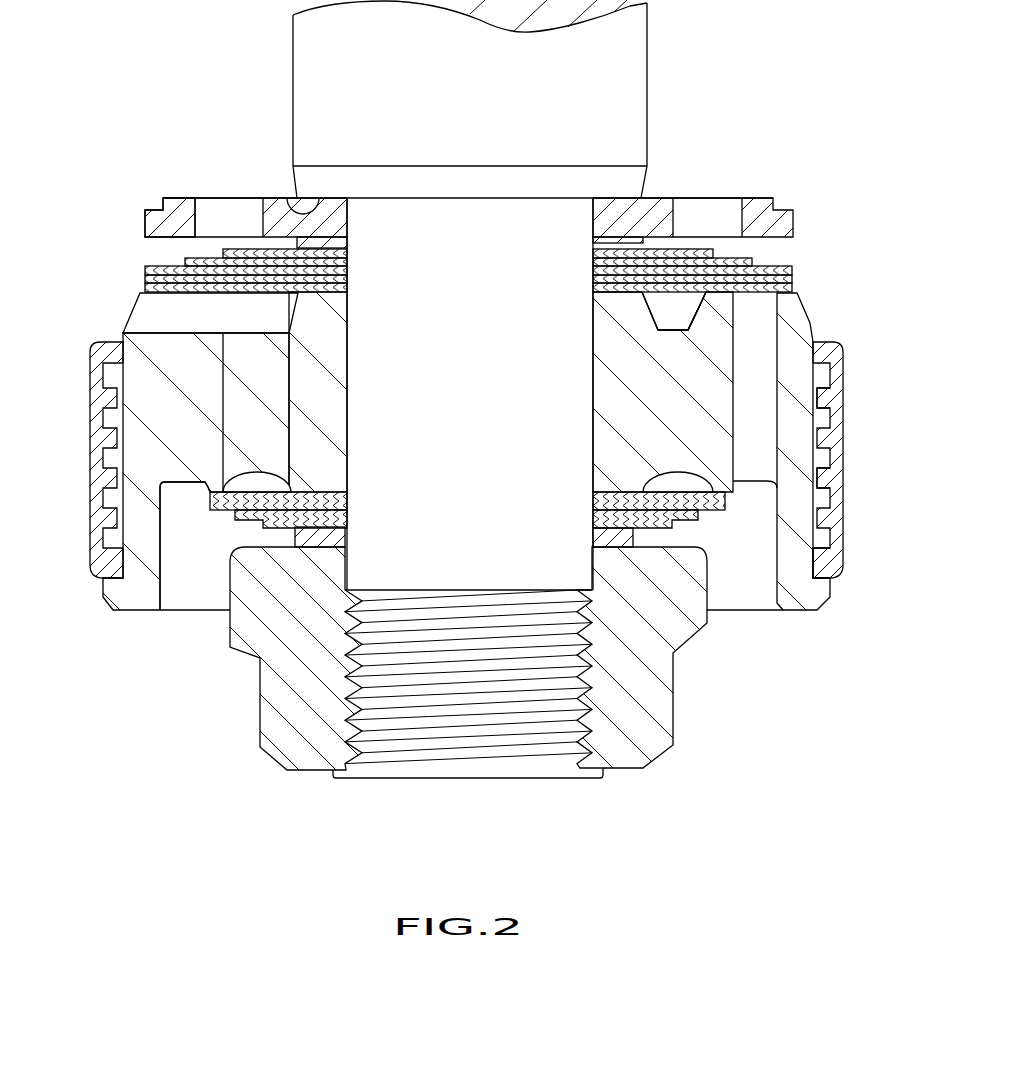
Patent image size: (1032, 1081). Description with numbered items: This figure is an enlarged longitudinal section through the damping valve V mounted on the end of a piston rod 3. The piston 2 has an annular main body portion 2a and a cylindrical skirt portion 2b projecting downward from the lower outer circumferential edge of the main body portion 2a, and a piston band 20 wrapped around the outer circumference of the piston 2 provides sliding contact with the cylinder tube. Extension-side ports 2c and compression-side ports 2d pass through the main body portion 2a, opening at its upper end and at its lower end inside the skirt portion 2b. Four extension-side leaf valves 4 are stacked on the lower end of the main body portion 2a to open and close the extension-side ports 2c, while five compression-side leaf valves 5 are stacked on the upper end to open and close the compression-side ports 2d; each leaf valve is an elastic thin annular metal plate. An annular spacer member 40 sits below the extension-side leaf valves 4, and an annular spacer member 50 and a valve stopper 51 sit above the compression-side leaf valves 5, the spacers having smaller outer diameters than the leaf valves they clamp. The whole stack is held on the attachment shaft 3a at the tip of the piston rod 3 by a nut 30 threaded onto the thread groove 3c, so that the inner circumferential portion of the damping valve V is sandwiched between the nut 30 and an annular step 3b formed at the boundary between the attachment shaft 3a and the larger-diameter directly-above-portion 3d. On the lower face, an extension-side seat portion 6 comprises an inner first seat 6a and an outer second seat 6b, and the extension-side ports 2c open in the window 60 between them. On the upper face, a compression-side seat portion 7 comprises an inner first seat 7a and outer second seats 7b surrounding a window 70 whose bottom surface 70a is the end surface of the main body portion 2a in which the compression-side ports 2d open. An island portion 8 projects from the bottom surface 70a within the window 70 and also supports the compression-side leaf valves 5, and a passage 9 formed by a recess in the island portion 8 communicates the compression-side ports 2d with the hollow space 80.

The piston 2 is at (116, 298).
The main body portion 2a is at (797, 360).
The skirt portion 2b is at (807, 530).
The extension-side ports 2c is at (243, 405).
The compression-side ports 2d is at (753, 408).
The piston rod 3 is at (659, 81).
The attachment shaft 3a is at (343, 348).
The step 3b is at (297, 217).
The thread groove 3c is at (473, 740).
The directly-above-portion 3d is at (612, 118).
The extension-side leaf valves 4 is at (212, 526).
The compression-side leaf valves 5 is at (790, 249).
The extension-side seat portion 6 is at (597, 498).
The first seat 6a is at (347, 500).
The second seat 6b is at (235, 500).
The compression-side seat portion 7 is at (345, 268).
The first seat 7a is at (593, 275).
The second seats 7b is at (793, 277).
The island portion 8 is at (725, 258).
The passage 9 is at (684, 322).
The piston band 20 is at (840, 482).
The nut 30 is at (673, 720).
The spacer member 40 is at (347, 528).
The spacer member 50 is at (593, 244).
The valve stopper 51 is at (147, 216).
The window 60 is at (260, 481).
The window 70 is at (640, 311).
The bottom surface 70a is at (673, 321).
The hollow space 80 is at (668, 316).
The damping valve V is at (160, 172).